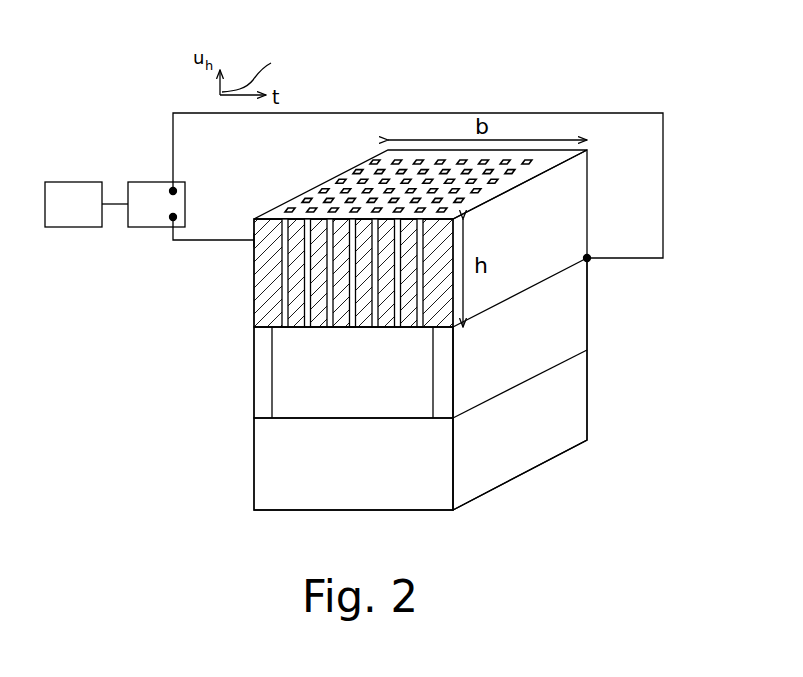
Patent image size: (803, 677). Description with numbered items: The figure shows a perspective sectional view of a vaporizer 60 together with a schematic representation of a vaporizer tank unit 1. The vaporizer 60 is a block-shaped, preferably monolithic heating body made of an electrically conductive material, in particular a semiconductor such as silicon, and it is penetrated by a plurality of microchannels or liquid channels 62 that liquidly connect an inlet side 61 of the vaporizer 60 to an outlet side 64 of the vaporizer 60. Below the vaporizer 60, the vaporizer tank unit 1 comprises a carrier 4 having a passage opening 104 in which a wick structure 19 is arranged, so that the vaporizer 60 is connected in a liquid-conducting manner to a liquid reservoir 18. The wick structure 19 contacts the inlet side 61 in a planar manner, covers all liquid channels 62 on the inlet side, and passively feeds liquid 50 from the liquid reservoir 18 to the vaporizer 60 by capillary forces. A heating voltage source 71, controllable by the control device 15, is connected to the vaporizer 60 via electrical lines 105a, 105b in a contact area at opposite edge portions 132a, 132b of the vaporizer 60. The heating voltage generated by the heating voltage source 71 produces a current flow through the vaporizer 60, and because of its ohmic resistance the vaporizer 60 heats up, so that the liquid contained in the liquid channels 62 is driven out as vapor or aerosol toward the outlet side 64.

The vaporizer tank unit 1 is at (603, 290).
The carrier 4 is at (264, 397).
The control device 15 is at (86, 204).
The liquid reservoir 18 is at (588, 397).
The wick structure 19 is at (353, 372).
The liquid 50 is at (353, 464).
The vaporizer 60 is at (251, 302).
The inlet side 61 is at (383, 328).
The liquid channels 62 is at (333, 308).
The outlet side 64 is at (361, 166).
The heating voltage source 71 is at (186, 205).
The passage opening 104 is at (273, 408).
The electrical line 105a is at (187, 243).
The electrical line 105b is at (632, 111).
The edge portion 132a is at (246, 234).
The edge portion 132b is at (593, 250).